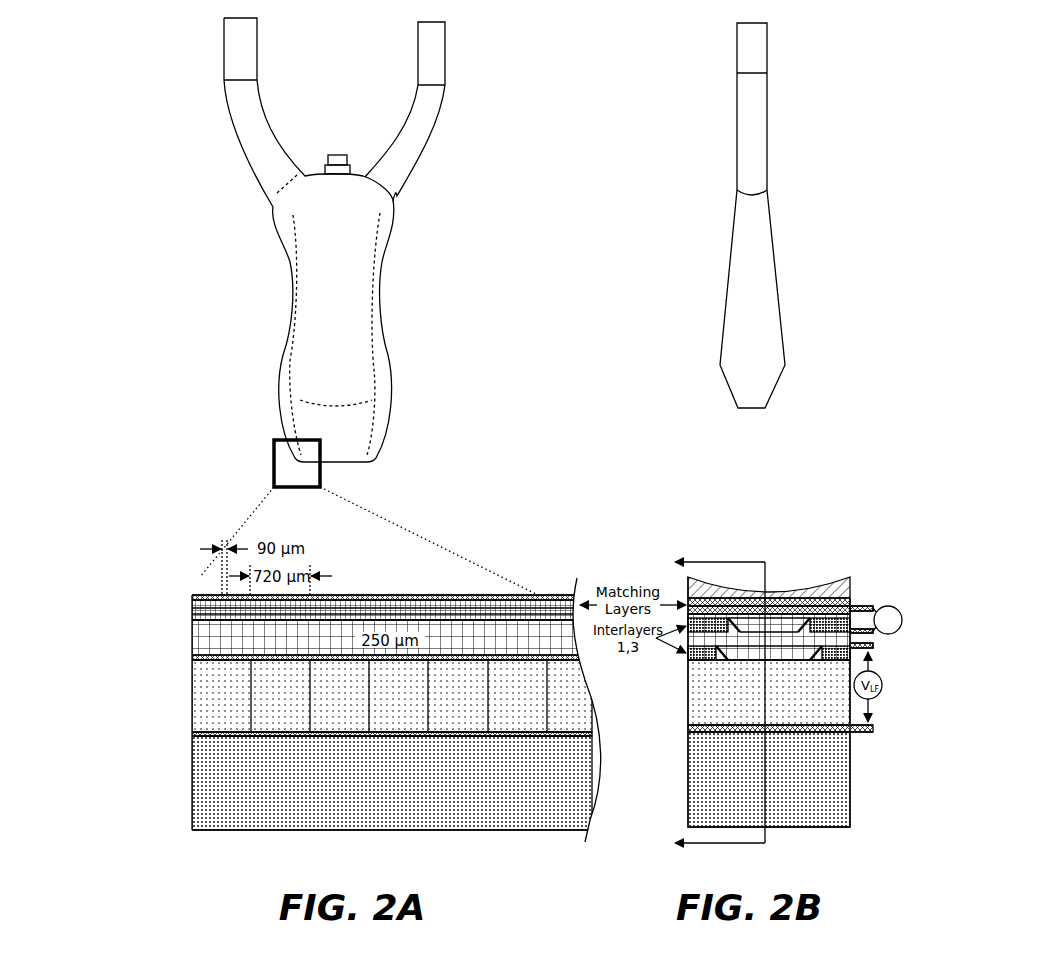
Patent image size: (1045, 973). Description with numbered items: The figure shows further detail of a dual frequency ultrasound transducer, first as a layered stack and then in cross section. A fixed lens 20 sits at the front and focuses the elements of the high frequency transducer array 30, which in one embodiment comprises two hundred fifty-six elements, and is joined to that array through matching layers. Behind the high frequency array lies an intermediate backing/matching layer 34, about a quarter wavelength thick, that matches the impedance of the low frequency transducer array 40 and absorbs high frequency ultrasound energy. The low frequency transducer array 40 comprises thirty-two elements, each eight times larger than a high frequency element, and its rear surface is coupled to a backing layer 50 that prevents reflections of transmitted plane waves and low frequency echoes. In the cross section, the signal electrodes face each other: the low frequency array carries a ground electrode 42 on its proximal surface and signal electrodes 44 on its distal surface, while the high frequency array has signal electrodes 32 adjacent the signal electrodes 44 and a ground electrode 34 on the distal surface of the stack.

In FIG. 2A, the fixed lens 20 is at (541, 593).
In FIG. 2B, the fixed lens 20 is at (686, 585).
In FIG. 2A, the high frequency transducer array 30 is at (190, 615).
In FIG. 2A, the low frequency transducer array 40 is at (190, 700).
In FIG. 2A, the backing layer 50 is at (190, 766).
In FIG. 2B, the signal electrodes 32 is at (876, 610).
In FIG. 2B, the intermediate backing/matching layer 34 is at (785, 636).
In FIG. 2B, the ground electrode 42 is at (874, 729).
In FIG. 2B, the signal electrodes 44 is at (874, 646).